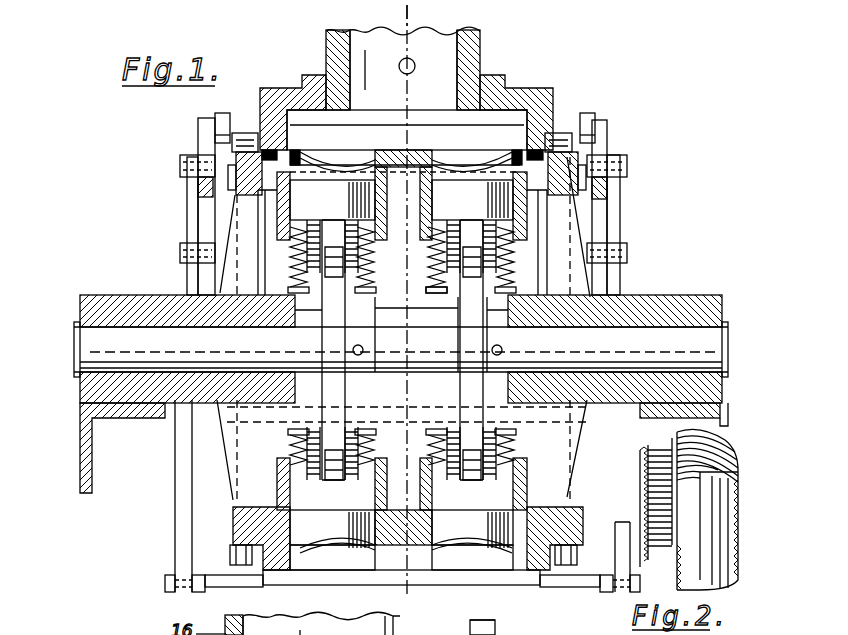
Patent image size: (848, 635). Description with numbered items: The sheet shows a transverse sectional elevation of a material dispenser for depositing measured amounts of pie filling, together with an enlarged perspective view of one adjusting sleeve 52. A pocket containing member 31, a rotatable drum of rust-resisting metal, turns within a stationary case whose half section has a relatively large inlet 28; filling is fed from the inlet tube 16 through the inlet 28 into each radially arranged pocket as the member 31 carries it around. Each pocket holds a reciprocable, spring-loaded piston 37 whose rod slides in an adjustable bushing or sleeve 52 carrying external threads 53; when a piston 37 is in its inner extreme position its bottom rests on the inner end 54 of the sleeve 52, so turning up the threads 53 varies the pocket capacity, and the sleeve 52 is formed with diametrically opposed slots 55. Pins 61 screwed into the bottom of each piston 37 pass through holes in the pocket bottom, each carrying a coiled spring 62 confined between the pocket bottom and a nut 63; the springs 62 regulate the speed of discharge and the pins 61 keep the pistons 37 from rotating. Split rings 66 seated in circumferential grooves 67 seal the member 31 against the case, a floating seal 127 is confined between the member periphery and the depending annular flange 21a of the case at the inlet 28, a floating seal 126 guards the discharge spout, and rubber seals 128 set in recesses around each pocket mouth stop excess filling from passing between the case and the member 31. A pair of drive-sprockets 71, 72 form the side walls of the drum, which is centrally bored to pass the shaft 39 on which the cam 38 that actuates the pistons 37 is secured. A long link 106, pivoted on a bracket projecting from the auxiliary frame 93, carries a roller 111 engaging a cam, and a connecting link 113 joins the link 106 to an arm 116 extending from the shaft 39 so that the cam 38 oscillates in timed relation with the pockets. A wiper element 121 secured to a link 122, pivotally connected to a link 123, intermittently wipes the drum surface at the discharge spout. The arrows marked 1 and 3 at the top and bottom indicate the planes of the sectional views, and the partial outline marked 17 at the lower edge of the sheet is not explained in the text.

In FIG. 1, the apparatus 1 is at (304, 606).
In FIG. 1, the section line 3 is at (412, 12).
In FIG. 1, the inlet tube 16 is at (484, 57).
In FIG. 1, the bracket 17 is at (489, 627).
In FIG. 1, the depending annular flange 21a is at (556, 108).
In FIG. 1, the inlet 28 is at (407, 130).
In FIG. 1, the pocket containing member 31 is at (555, 170).
In FIG. 1, the piston 37 is at (330, 185).
In FIG. 1, the cam 38 is at (335, 330).
In FIG. 1, the shaft 39 is at (78, 349).
In FIG. 2, the adjustable bushing or sleeve 52 is at (744, 471).
In FIG. 2, the external threads 53 is at (721, 457).
In FIG. 2, the inner end of sleeve 54 is at (712, 489).
In FIG. 2, the diametrically opposed slots 55 is at (729, 530).
In FIG. 1, the pins 61 is at (372, 290).
In FIG. 1, the springs 62 is at (427, 268).
In FIG. 1, the nut 63 is at (434, 294).
In FIG. 1, the split rings 66 is at (568, 158).
In FIG. 1, the grooves 67 is at (527, 170).
In FIG. 1, the drive-sprocket 71 is at (232, 553).
In FIG. 1, the drive-sprocket 72 is at (568, 551).
In FIG. 1, the auxiliary frame 93 is at (80, 437).
In FIG. 1, the link 106 is at (198, 136).
In FIG. 1, the roller 111 is at (222, 113).
In FIG. 1, the connecting link 113 is at (187, 200).
In FIG. 1, the arm 116 is at (200, 278).
In FIG. 1, the wiper element 121 is at (420, 615).
In FIG. 1, the link 122 is at (197, 593).
In FIG. 1, the link 123 is at (178, 485).
In FIG. 1, the floating seal 126 is at (470, 160).
In FIG. 1, the floating seal 127 is at (518, 138).
In FIG. 1, the rubber seal 128 is at (402, 203).